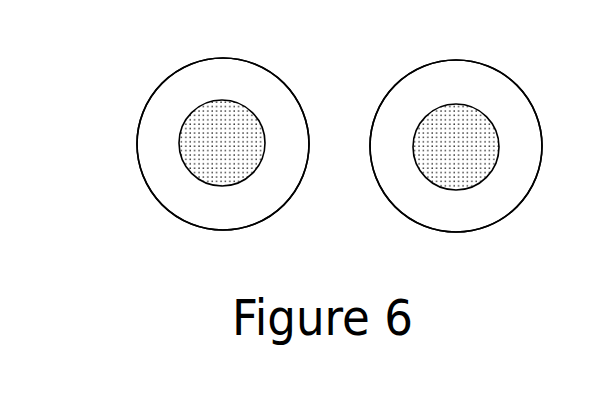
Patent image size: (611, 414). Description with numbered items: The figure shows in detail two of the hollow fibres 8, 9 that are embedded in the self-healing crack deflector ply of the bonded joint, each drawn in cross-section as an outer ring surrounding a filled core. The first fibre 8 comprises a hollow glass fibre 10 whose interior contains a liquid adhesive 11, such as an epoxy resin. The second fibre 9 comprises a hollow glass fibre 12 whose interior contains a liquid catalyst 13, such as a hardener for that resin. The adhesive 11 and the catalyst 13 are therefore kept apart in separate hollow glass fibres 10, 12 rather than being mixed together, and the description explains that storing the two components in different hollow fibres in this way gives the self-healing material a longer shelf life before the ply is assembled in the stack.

The hollow fibre 8 is at (131, 108).
The hollow fibre 9 is at (386, 80).
The hollow glass fibre 10 is at (224, 72).
The liquid adhesive 11 is at (237, 157).
The hollow glass fibre 12 is at (488, 85).
The liquid catalyst 13 is at (468, 168).